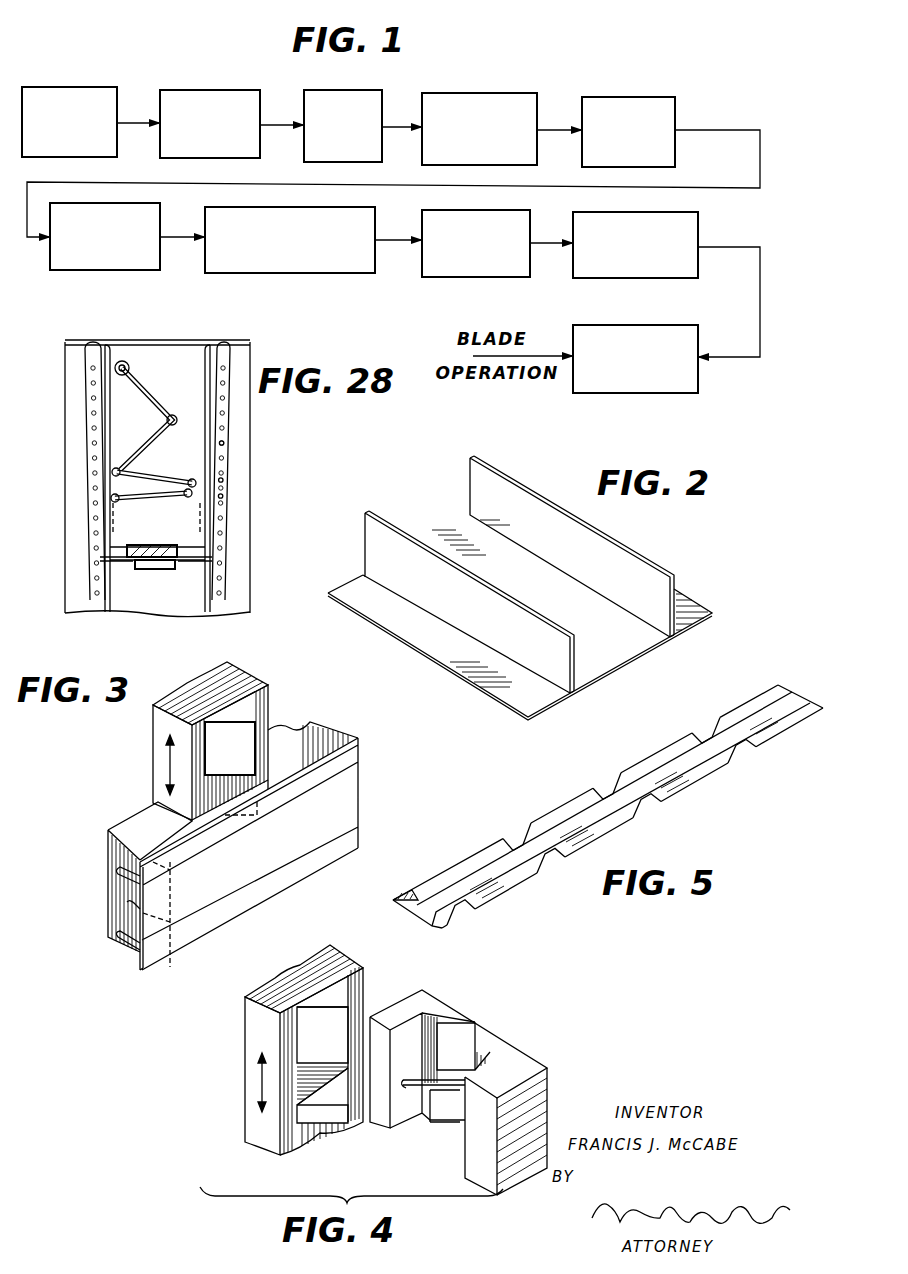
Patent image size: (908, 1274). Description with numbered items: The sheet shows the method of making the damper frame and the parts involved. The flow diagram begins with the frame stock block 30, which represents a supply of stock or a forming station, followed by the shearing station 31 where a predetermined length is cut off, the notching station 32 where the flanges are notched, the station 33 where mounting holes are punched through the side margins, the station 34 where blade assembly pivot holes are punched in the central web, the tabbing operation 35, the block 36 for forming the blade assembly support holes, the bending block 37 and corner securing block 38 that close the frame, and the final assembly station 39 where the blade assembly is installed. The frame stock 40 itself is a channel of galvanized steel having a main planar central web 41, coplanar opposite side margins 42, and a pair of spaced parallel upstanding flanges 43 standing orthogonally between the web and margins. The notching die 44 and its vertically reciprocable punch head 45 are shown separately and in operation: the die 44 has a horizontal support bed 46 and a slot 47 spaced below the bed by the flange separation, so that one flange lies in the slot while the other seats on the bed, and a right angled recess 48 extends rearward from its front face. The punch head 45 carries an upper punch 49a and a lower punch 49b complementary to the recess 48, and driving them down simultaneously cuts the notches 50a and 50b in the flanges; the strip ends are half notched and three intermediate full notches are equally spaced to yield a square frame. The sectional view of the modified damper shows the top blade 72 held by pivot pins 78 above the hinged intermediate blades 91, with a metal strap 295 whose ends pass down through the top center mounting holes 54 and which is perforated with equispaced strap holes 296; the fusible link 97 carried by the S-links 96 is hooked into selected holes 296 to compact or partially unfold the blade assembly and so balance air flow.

In FIG. 1, the frame stock block 30 is at (84, 88).
In FIG. 1, the shearing station 31 is at (210, 90).
In FIG. 1, the notching station 32 is at (338, 90).
In FIG. 1, the mounting hole punching station 33 is at (482, 93).
In FIG. 1, the pivot hole punching station 34 is at (624, 97).
In FIG. 1, the tabbing operation 35 is at (98, 270).
In FIG. 1, the blade assembly support holes block 36 is at (283, 273).
In FIG. 1, the bending block 37 is at (473, 277).
In FIG. 1, the corner securing block 38 is at (634, 278).
In FIG. 1, the final assembly station 39 is at (638, 393).
In FIG. 28, the frame stock 40 is at (136, 478).
In FIG. 2, the frame stock 40 is at (535, 592).
In FIG. 3, the frame stock 40 is at (227, 854).
In FIG. 5, the frame stock 40 is at (606, 815).
In FIG. 2, the central web 41 is at (465, 540).
In FIG. 28, the side margins 42 is at (68, 420).
In FIG. 2, the side margins 42 is at (688, 607).
In FIG. 2, the upstanding flanges 43 is at (628, 550).
In FIG. 3, the upstanding flanges 43 is at (120, 877).
In FIG. 5, the upstanding flanges 43 is at (553, 812).
In FIG. 3, the notching die 44 is at (133, 826).
In FIG. 4, the notching die 44 is at (458, 1079).
In FIG. 3, the punch head 45 is at (258, 676).
In FIG. 4, the punch head 45 is at (255, 1043).
In FIG. 4, the horizontal support bed 46 is at (405, 1007).
In FIG. 3, the slot 47 is at (128, 906).
In FIG. 4, the slot 47 is at (448, 1083).
In FIG. 4, the right angled recess 48 is at (462, 1023).
In FIG. 3, the upper punch 49a is at (250, 733).
In FIG. 4, the upper punch 49a is at (337, 998).
In FIG. 4, the lower punch 49b is at (327, 1113).
In FIG. 5, the flange notch 50a is at (452, 924).
In FIG. 5, the flange notch 50b is at (418, 893).
In FIG. 28, the top center mounting holes 54 is at (86, 347).
In FIG. 28, the top blade 72 is at (152, 396).
In FIG. 28, the pivot pins 78 is at (124, 378).
In FIG. 28, the intermediate blades 91 is at (178, 466).
In FIG. 28, the S-links 96 is at (103, 563).
In FIG. 28, the fusible link 97 is at (150, 570).
In FIG. 28, the metal strap 295 is at (224, 457).
In FIG. 28, the strap holes 296 is at (224, 481).